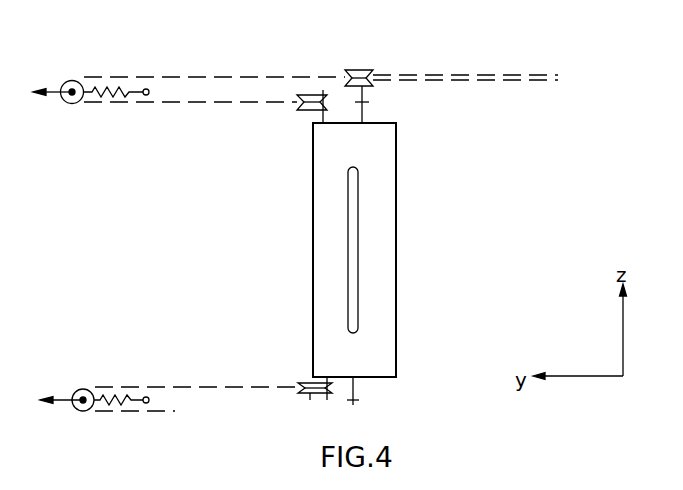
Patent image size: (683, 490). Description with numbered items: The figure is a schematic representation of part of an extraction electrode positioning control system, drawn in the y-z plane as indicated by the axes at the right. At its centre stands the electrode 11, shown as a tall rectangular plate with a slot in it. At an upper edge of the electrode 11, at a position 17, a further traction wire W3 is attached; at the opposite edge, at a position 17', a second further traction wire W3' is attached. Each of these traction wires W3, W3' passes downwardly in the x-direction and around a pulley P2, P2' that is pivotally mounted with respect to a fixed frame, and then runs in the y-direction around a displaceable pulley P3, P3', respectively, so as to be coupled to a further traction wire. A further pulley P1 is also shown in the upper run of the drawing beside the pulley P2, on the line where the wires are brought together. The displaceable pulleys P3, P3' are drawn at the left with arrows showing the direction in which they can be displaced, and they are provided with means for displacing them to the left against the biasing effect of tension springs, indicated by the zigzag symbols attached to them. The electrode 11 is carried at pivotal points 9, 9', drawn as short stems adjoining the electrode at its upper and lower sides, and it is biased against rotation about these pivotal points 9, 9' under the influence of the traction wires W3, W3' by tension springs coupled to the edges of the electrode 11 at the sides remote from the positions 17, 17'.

The displaceable pulley P3 is at (91, 67).
The traction wire W3 is at (214, 94).
The pulley P2 is at (312, 70).
The valve P1 is at (362, 70).
The pivotal point 9 is at (380, 104).
The position 17 is at (352, 121).
The electrode 11 is at (312, 208).
The traction wire W3' is at (196, 379).
The displaceable pulley P3' is at (94, 421).
The pulley P2' is at (296, 406).
The position 17' is at (349, 406).
The pivotal point 9' is at (377, 391).